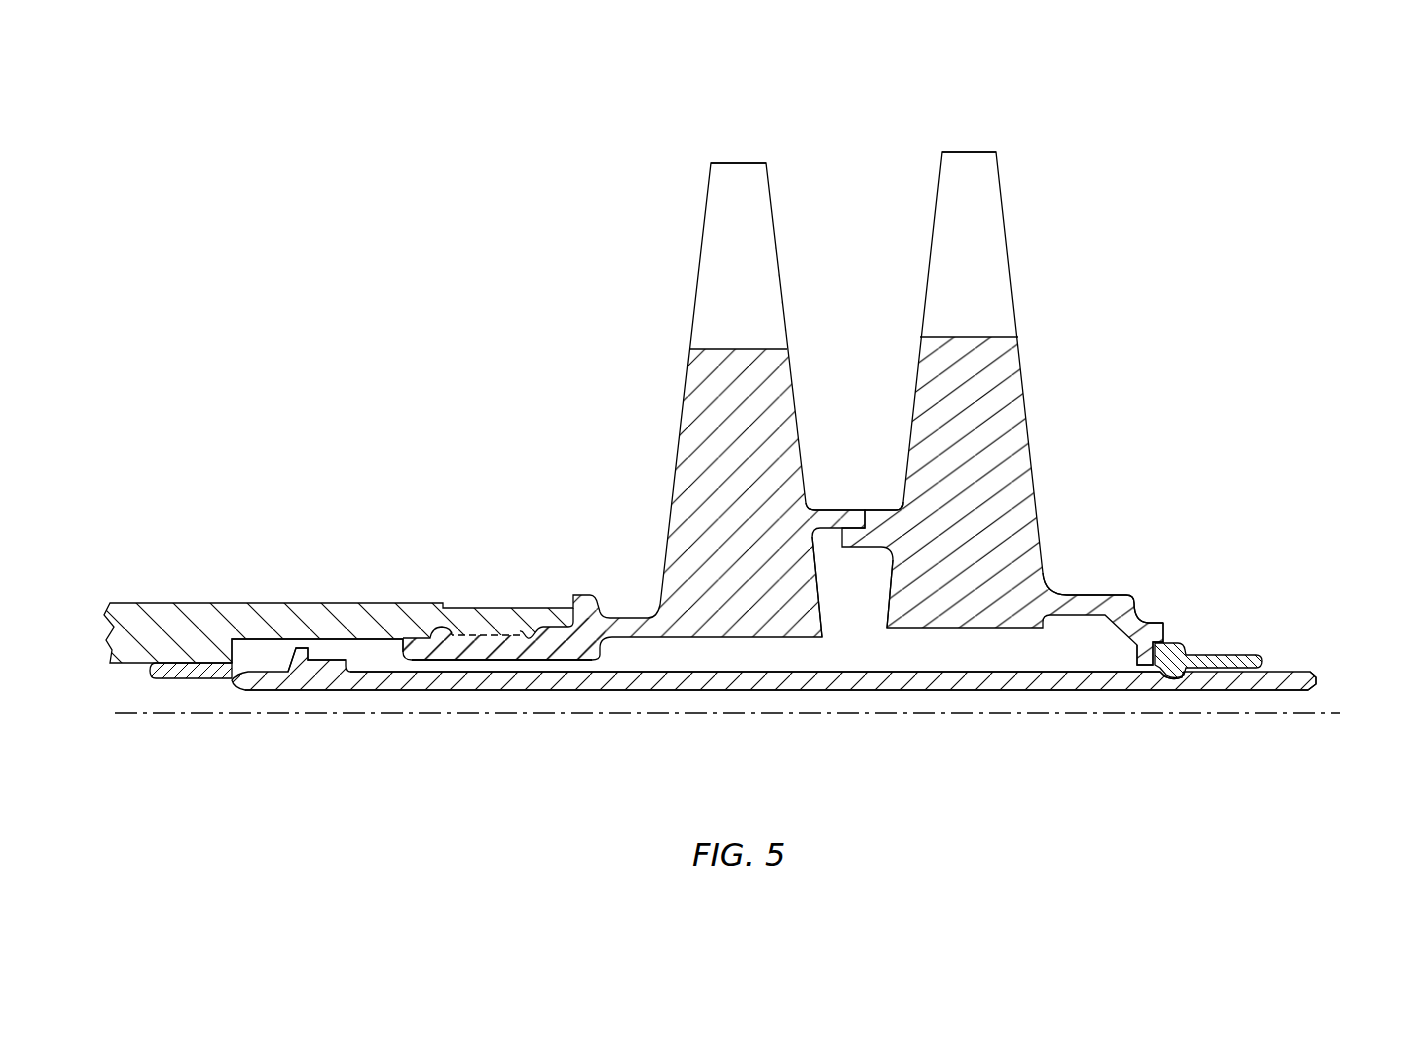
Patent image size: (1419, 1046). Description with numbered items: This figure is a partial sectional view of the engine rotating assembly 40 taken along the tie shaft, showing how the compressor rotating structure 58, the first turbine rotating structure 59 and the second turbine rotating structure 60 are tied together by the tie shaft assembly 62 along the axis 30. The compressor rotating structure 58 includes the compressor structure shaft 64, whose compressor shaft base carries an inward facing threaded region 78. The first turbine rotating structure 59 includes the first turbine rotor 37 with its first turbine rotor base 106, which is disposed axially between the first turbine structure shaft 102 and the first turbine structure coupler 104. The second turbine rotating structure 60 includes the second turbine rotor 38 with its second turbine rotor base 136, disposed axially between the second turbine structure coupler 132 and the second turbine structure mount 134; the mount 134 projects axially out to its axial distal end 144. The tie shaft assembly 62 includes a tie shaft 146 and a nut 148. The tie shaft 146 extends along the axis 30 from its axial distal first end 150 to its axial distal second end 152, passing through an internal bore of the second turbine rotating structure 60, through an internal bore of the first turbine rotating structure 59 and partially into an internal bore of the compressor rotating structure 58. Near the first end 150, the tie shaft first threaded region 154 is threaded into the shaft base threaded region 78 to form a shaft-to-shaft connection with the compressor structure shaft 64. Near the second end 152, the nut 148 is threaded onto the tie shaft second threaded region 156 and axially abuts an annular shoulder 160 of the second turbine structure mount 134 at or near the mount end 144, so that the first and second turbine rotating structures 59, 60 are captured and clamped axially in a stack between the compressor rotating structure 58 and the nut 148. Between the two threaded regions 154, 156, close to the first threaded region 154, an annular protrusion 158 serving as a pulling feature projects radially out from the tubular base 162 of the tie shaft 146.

The axis 30 is at (121, 722).
The first turbine rotor 37 is at (676, 363).
The second turbine rotor 38 is at (1038, 345).
The rotating assembly 40 is at (733, 429).
The compressor rotating structure 58 is at (332, 581).
The first turbine rotating structure 59 is at (743, 150).
The second turbine rotating structure 60 is at (976, 142).
The tie shaft assembly 62 is at (998, 698).
The compressor structure shaft 64 is at (140, 594).
The inner threaded region 78 is at (186, 680).
The first turbine structure shaft 102 is at (507, 668).
The first turbine structure coupler 104 is at (836, 501).
The first turbine rotor base 106 is at (762, 485).
The second turbine structure coupler 132 is at (870, 563).
The second turbine structure mount 134 is at (1103, 585).
The second turbine rotor base 136 is at (990, 485).
The axial distal end of second turbine structure mount 144 is at (1170, 625).
The tie shaft 146 is at (888, 698).
The nut 148 is at (1247, 654).
The axial distal first end of tie shaft 150 is at (140, 712).
The axial distal second end of tie shaft 152 is at (1320, 680).
The tie shaft first threaded region 154 is at (198, 660).
The tie shaft second threaded region 156 is at (1223, 630).
The annular protrusion 158 is at (333, 650).
The annular shoulder 160 is at (1178, 679).
The tubular base 162 is at (614, 690).